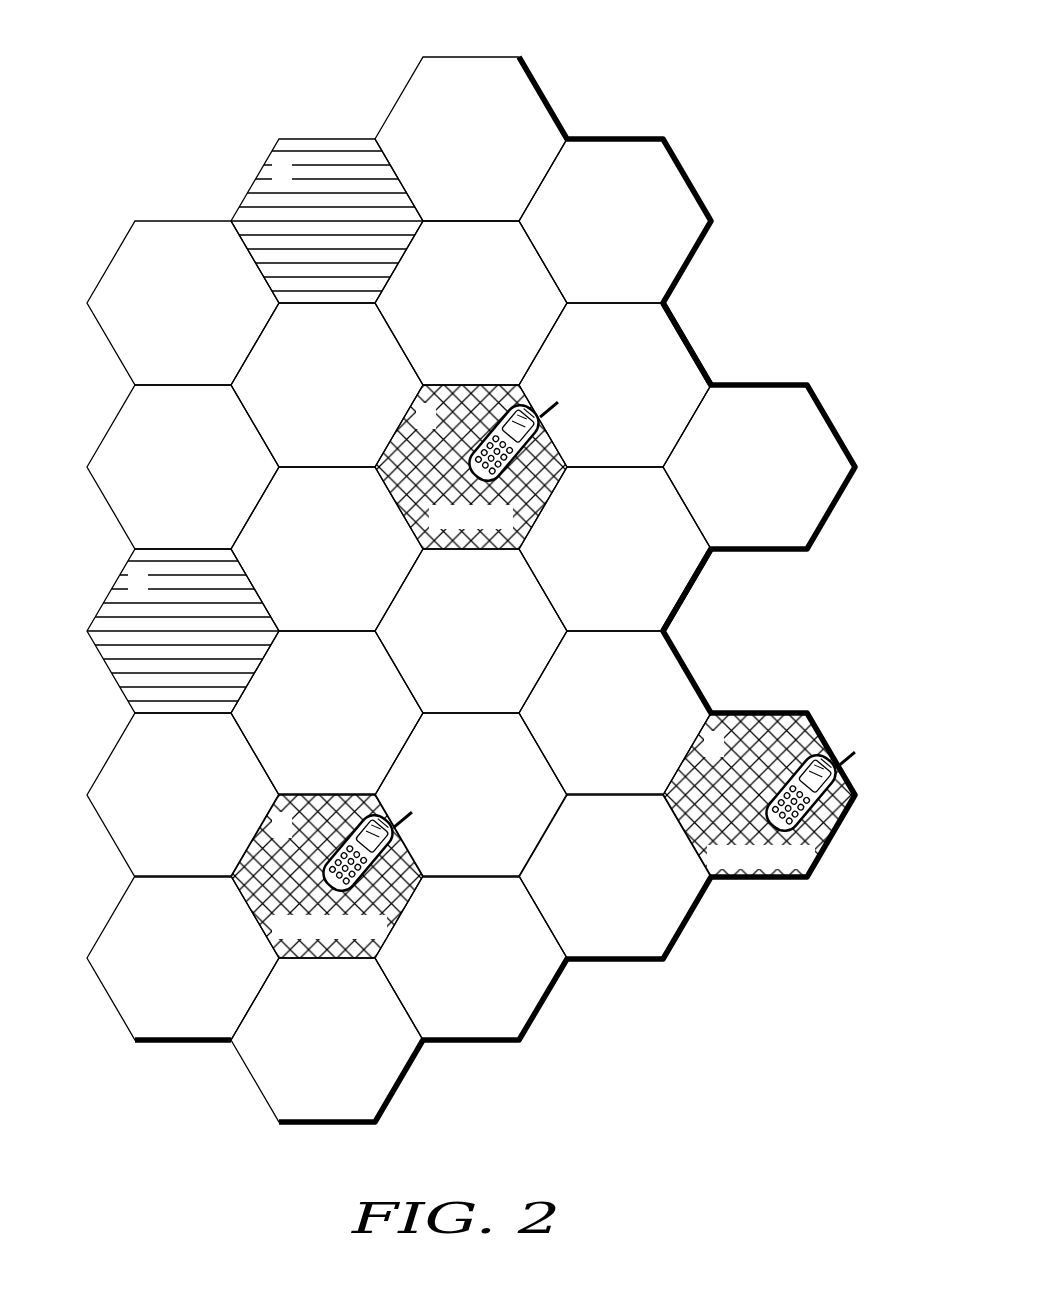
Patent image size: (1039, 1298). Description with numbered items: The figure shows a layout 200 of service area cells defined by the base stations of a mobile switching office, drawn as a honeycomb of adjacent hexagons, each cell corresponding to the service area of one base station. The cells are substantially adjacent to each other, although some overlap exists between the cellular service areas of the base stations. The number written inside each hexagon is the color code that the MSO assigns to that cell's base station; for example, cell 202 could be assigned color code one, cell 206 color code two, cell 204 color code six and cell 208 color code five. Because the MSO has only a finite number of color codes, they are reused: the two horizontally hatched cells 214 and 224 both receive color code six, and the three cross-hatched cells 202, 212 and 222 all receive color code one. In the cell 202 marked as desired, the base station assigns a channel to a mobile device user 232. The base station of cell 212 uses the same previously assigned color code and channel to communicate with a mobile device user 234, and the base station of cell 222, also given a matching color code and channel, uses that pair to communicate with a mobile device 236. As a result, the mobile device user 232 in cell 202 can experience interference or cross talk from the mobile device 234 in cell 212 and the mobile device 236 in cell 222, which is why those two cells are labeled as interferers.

The cellular network frequency reuse pattern 200 is at (714, 81).
The cell 202 is at (476, 498).
The cell 204 is at (673, 582).
The cell 206 is at (797, 435).
The cell 208 is at (660, 358).
The cell 212 is at (771, 778).
The cell 214 is at (135, 618).
The cell 222 is at (329, 909).
The cell 224 is at (277, 200).
The mobile device user 232 is at (522, 467).
The mobile device user 234 is at (822, 803).
The mobile device 236 is at (372, 870).